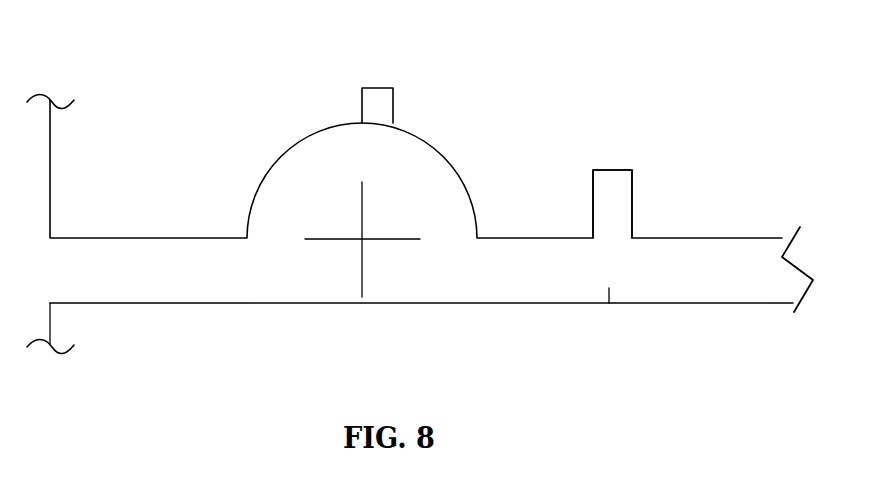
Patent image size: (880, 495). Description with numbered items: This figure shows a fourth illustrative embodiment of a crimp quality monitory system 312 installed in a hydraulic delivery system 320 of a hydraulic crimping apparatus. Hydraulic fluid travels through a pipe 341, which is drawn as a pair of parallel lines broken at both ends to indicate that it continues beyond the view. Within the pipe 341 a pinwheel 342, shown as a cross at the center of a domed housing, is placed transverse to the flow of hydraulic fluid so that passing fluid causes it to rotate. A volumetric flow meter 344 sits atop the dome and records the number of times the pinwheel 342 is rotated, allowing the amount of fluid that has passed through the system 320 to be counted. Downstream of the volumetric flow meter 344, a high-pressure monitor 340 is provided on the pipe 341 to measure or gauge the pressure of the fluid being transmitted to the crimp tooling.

The crimp quality monitory system 312 is at (526, 139).
The hydraulic delivery system 320 is at (132, 345).
The high-pressure monitor 340 is at (632, 194).
The pipe 341 is at (609, 288).
The pinwheel 342 is at (362, 270).
The volumetric flow meter 344 is at (393, 102).